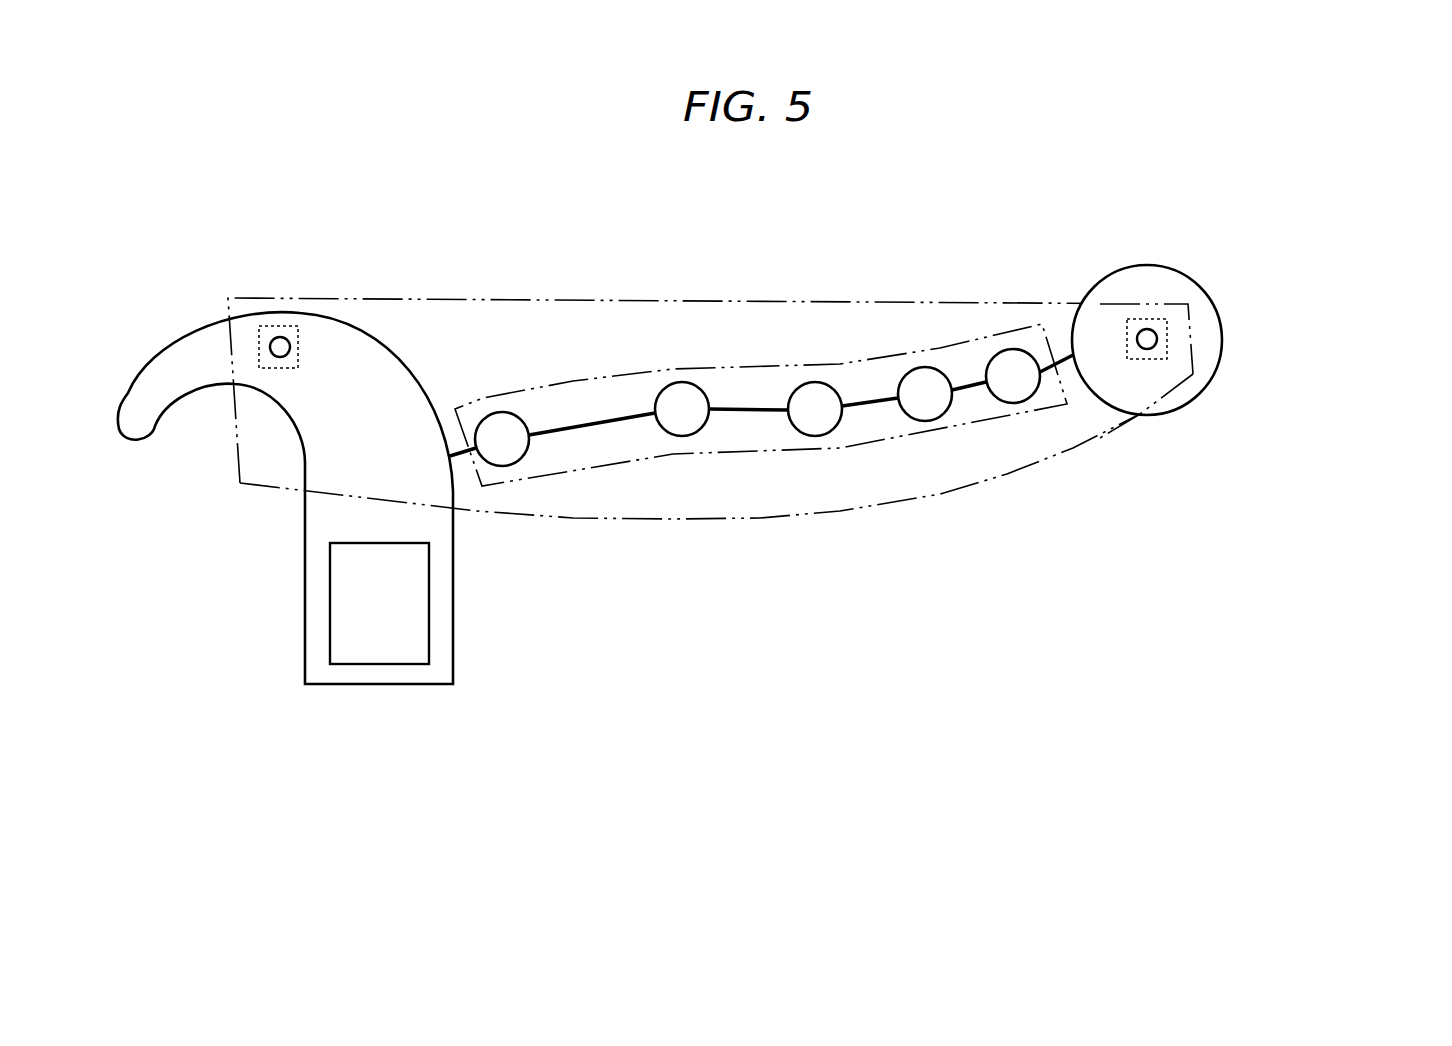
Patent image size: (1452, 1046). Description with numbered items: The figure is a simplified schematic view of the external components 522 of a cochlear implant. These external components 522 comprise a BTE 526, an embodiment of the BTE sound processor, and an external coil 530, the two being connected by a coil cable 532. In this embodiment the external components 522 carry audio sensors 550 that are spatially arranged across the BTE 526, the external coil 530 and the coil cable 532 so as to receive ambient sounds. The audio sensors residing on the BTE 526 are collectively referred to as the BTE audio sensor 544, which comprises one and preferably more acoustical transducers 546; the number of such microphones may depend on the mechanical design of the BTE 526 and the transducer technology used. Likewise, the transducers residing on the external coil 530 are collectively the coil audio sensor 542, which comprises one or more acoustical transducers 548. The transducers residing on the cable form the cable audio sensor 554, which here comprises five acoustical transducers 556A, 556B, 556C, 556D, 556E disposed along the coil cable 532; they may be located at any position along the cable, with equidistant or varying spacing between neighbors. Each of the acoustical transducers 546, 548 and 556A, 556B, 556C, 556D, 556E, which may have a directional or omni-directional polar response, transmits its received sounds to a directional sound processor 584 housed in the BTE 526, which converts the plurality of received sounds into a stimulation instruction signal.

The external components 522 is at (981, 736).
The BTE 526 is at (305, 620).
The external coil 530 is at (1177, 267).
The coil cable 532 is at (577, 423).
The coil audio sensor 542 is at (1167, 352).
The BTE audio sensor 544 is at (283, 332).
The acoustical transducer 546 is at (270, 346).
The acoustical transducer 548 is at (1157, 338).
The audio sensors 550 is at (868, 507).
The cable audio sensor 554 is at (987, 422).
The acoustical transducer 556A is at (495, 432).
The acoustical transducer 556B is at (685, 398).
The acoustical transducer 556C is at (818, 400).
The acoustical transducer 556D is at (928, 385).
The acoustical transducer 556E is at (1018, 368).
The directional sound processor 584 is at (388, 633).